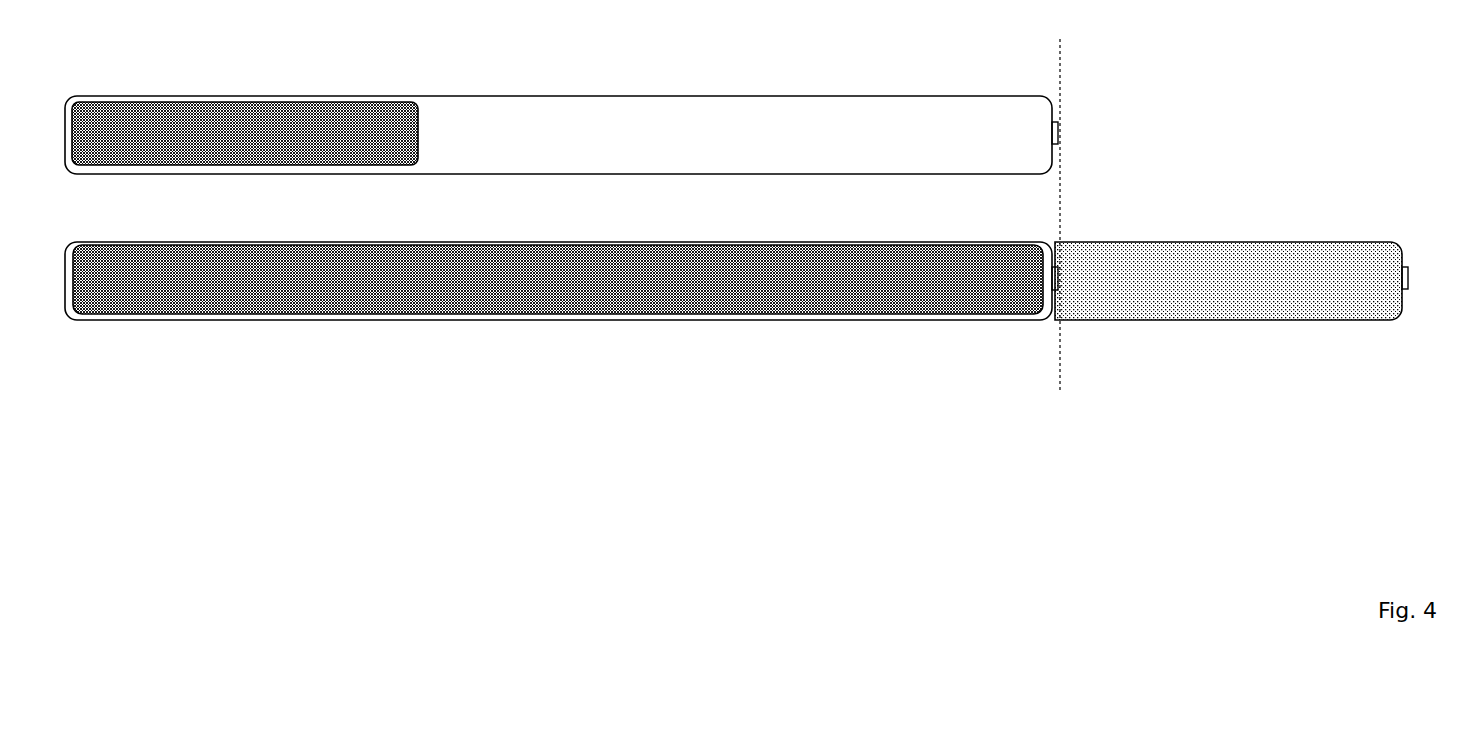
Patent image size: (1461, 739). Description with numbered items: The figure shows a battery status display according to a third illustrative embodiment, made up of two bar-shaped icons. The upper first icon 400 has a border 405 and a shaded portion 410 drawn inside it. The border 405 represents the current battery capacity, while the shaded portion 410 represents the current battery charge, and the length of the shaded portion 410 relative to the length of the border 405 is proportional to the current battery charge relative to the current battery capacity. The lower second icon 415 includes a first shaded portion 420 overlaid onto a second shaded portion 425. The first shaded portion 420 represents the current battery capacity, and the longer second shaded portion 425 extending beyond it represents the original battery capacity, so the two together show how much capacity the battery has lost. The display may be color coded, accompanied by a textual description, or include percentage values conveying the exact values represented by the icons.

The first icon 400 is at (561, 98).
The border 405 is at (426, 95).
The shaded portion 410 is at (203, 101).
The second icon 415 is at (460, 335).
The first shaded portion 420 is at (957, 290).
The second shaded portion 425 is at (1238, 321).